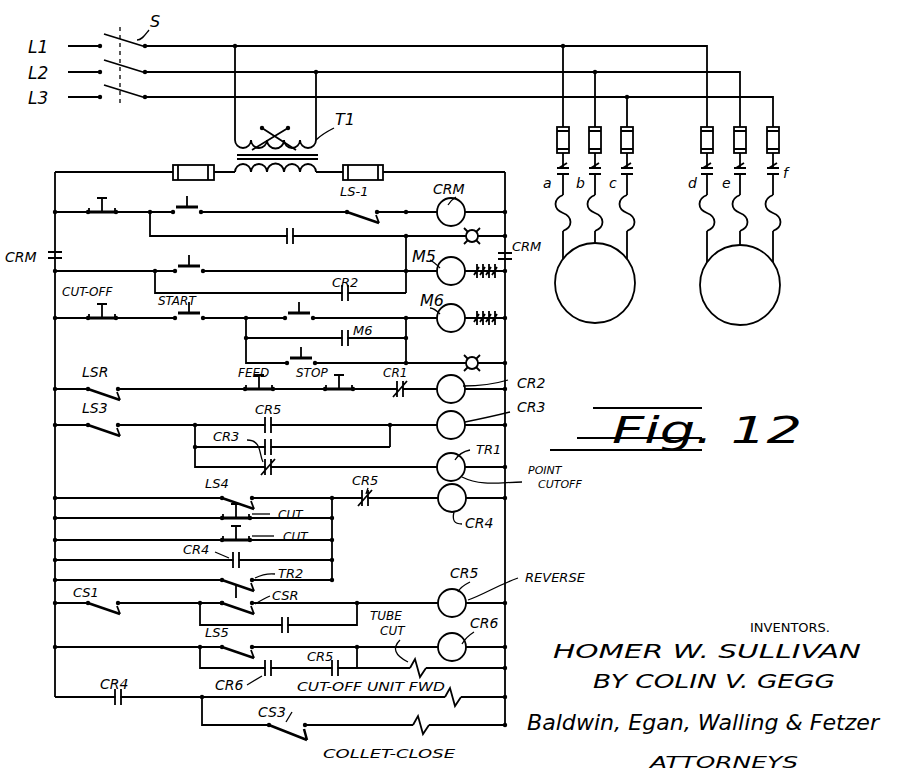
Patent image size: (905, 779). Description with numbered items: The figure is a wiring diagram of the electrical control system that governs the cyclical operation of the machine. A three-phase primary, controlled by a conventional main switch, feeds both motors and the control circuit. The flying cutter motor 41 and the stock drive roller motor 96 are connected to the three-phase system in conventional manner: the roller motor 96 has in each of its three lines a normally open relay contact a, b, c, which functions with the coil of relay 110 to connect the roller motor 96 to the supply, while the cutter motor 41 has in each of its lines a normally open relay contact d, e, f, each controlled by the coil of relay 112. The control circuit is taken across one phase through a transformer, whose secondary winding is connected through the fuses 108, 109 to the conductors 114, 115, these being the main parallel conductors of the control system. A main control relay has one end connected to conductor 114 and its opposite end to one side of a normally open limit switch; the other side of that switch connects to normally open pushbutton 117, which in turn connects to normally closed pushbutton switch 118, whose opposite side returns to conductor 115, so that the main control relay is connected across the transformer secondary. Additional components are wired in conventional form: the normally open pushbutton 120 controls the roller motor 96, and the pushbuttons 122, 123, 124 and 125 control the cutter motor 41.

The conductor 115 is at (100, 172).
The fuse 109 is at (204, 155).
The fuse 108 is at (362, 165).
The conductor 114 is at (460, 172).
The normally open pushbutton 117 is at (203, 205).
The normally closed pushbutton switch 118 is at (105, 216).
The normally open pushbutton 120 is at (196, 258).
The pushbutton 122 is at (104, 322).
The pushbutton 123 is at (190, 322).
The pushbutton 124 is at (306, 310).
The pushbutton 125 is at (318, 355).
The relay 110 is at (490, 280).
The relay 112 is at (490, 325).
The stock drive roller motor 96 is at (634, 298).
The flying cutter motor 41 is at (781, 283).